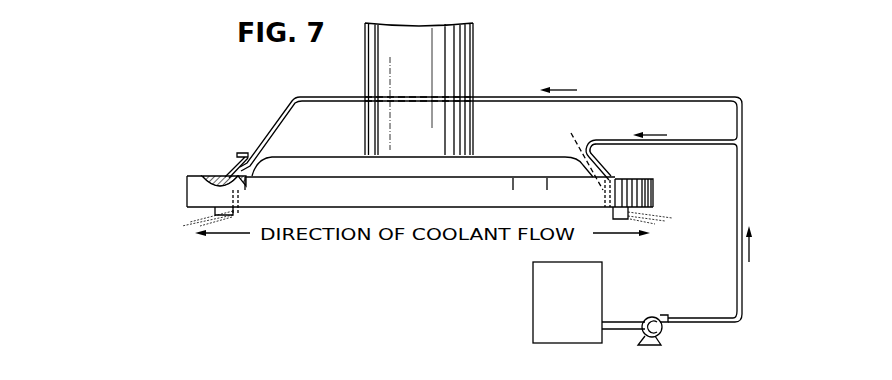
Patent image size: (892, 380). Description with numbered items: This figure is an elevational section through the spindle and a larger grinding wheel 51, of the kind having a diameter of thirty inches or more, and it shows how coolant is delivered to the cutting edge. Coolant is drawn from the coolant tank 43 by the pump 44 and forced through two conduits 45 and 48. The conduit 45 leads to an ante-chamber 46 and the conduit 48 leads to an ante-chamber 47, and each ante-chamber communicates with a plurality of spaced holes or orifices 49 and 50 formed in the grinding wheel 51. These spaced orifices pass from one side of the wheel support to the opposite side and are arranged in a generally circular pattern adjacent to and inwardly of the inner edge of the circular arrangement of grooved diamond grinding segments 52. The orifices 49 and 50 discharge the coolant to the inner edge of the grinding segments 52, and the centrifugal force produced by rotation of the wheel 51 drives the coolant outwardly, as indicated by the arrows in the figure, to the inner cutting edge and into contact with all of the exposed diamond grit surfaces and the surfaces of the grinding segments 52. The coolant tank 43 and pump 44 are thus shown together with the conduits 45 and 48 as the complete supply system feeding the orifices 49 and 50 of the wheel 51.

The coolant tank 43 is at (538, 308).
The pump 44 is at (661, 334).
The conduit 45 is at (318, 97).
The ante-chamber 46 is at (238, 152).
The ante-chamber 47 is at (603, 158).
The conduit 48 is at (675, 140).
The orifice 49 is at (193, 181).
The orifice 50 is at (548, 147).
The grinding wheel 51 is at (196, 172).
The grinding segments 52 is at (196, 210).